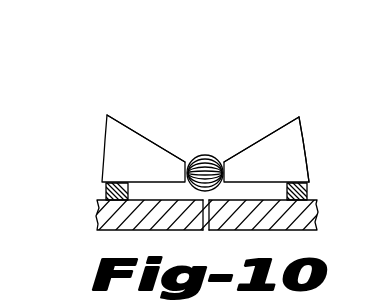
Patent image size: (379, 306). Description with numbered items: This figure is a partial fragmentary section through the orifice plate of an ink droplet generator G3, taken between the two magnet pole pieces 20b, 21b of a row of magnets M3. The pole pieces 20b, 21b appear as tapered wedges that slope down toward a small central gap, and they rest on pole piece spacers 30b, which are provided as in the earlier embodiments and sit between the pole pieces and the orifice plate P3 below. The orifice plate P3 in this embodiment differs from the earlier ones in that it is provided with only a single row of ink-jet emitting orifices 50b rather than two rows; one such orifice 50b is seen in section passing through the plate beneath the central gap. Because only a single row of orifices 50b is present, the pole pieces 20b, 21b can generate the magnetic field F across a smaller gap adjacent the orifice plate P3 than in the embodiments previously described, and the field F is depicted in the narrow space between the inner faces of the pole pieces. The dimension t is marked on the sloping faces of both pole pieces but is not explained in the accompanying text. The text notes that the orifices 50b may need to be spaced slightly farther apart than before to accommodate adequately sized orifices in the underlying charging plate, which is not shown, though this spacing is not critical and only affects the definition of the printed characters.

The generator G3 is at (197, 151).
The row of magnets M3 is at (303, 127).
The magnet pole piece 20b is at (118, 148).
The magnet pole piece 21b is at (296, 150).
The pole piece spacer 30b is at (106, 193).
The orifice plate P3 is at (96, 223).
The orifice 50b is at (207, 232).
The magnetic field F is at (213, 158).
The tapered surface thickness t is at (133, 128).